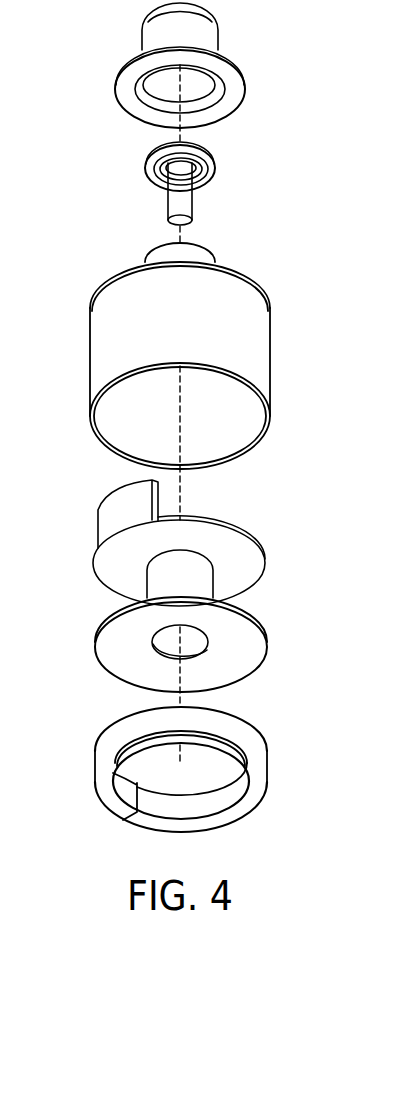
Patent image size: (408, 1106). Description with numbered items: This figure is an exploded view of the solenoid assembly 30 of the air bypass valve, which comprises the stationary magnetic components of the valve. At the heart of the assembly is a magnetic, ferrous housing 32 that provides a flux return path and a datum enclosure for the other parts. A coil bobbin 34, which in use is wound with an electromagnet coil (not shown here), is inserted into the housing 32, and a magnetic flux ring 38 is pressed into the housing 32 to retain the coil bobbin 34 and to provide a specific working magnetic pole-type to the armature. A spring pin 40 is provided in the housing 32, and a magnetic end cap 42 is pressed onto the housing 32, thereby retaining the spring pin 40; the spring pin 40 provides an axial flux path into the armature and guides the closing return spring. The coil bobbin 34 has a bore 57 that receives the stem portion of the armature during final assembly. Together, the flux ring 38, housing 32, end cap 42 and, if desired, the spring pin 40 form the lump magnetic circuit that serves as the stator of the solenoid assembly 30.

The solenoid assembly 30 is at (60, 236).
The housing 32 is at (89, 353).
The coil bobbin 34 is at (96, 638).
The flux ring 38 is at (96, 781).
The spring pin 40 is at (148, 162).
The end cap 42 is at (123, 67).
The bore 57 is at (168, 652).